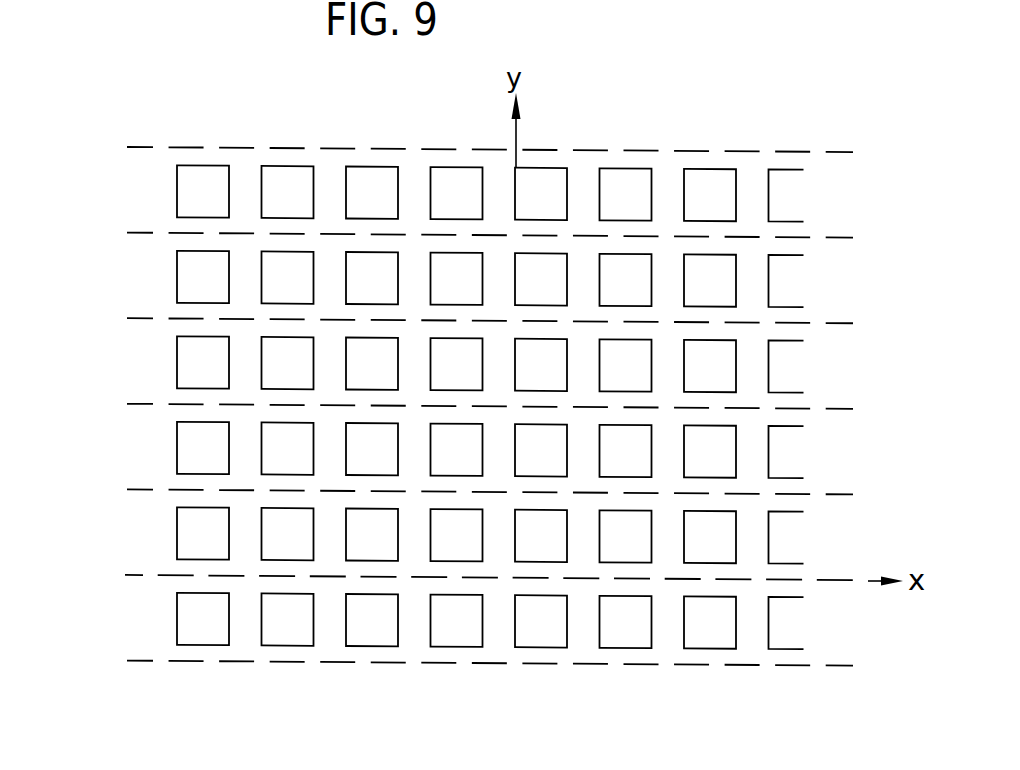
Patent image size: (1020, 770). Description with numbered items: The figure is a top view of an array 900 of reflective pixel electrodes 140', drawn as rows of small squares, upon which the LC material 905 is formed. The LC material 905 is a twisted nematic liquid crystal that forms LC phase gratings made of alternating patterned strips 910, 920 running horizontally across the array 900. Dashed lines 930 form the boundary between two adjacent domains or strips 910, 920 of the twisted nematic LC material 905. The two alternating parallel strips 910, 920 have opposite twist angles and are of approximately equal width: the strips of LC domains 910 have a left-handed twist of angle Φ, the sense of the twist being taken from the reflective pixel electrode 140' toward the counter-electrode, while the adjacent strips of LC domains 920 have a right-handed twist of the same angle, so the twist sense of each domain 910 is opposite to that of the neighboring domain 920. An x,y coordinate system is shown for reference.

The array of reflective pixel electrodes 900 is at (478, 456).
The LC material 905 is at (125, 350).
The strip 910 is at (818, 195).
The strip 920 is at (815, 280).
The dashed lines 930 is at (133, 661).
The reflective pixel electrode 140' is at (273, 650).